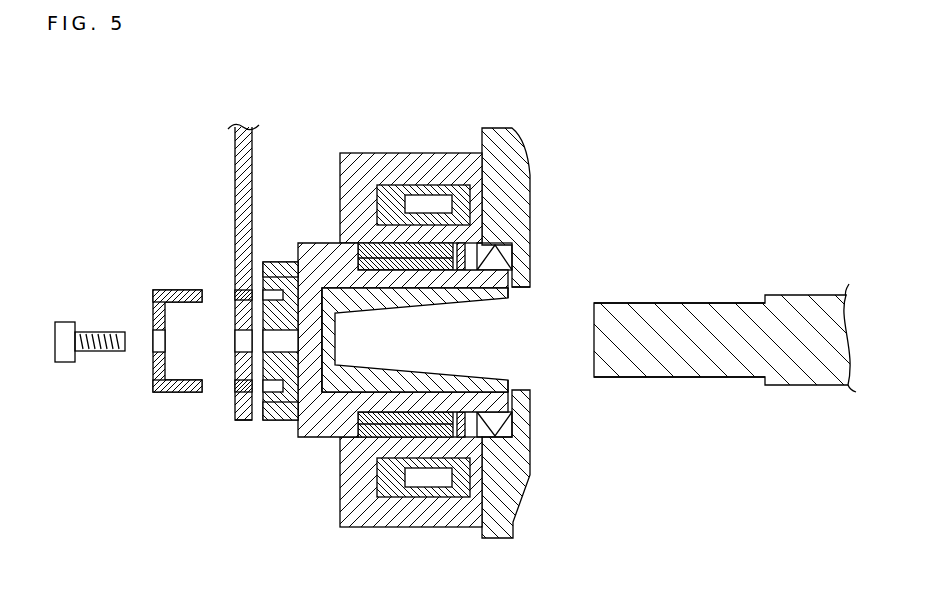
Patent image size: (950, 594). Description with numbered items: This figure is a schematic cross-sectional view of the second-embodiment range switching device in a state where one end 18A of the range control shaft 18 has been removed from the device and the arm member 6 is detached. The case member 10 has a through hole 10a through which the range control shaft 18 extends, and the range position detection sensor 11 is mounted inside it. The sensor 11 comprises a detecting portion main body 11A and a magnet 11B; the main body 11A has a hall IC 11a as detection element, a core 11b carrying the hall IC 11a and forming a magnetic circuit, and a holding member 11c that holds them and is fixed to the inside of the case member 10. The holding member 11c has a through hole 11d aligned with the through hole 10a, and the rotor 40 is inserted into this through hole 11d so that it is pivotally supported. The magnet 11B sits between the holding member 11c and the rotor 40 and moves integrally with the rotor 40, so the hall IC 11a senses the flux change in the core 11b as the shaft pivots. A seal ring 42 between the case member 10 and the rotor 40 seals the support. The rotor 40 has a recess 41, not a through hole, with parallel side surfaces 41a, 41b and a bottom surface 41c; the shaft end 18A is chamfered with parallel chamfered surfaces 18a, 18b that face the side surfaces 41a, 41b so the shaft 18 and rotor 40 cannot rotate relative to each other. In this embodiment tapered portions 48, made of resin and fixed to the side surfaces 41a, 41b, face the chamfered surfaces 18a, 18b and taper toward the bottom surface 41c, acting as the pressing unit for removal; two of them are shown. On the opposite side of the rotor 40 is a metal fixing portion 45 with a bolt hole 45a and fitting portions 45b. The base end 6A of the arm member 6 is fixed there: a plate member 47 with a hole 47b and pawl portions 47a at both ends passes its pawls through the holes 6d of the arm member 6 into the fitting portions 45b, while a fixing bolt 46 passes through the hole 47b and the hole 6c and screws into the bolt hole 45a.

The arm member 6 is at (237, 148).
The base end 6A is at (236, 414).
The hole 6c is at (243, 342).
The holes 6d is at (237, 293).
The case member 10 is at (520, 183).
The through hole 10a is at (520, 289).
The range position detection sensor 11 is at (485, 79).
The detecting portion main body 11A is at (472, 107).
The magnet 11B is at (372, 250).
The hall IC 11a is at (435, 198).
The core 11b is at (390, 198).
The holding member 11c is at (357, 177).
The through hole 11d is at (383, 433).
The range control shaft 18 is at (810, 295).
The one end 18A is at (725, 348).
The chamfered surface 18a is at (682, 378).
The chamfered surface 18b is at (681, 302).
The rotor 40 is at (306, 402).
The recess 41 is at (352, 378).
The side surface 41a is at (478, 388).
The side surface 41b is at (484, 297).
The bottom surface 41c is at (323, 337).
The seal ring 42 is at (510, 247).
The fixing portion 45 is at (273, 421).
The bolt hole 45a is at (270, 340).
The fitting portions 45b is at (270, 292).
The fixing bolt 46 is at (65, 356).
The plate member 47 is at (153, 375).
The pawl portions 47a is at (175, 287).
The hole 47b is at (157, 341).
The tapered portions 48 is at (445, 300).